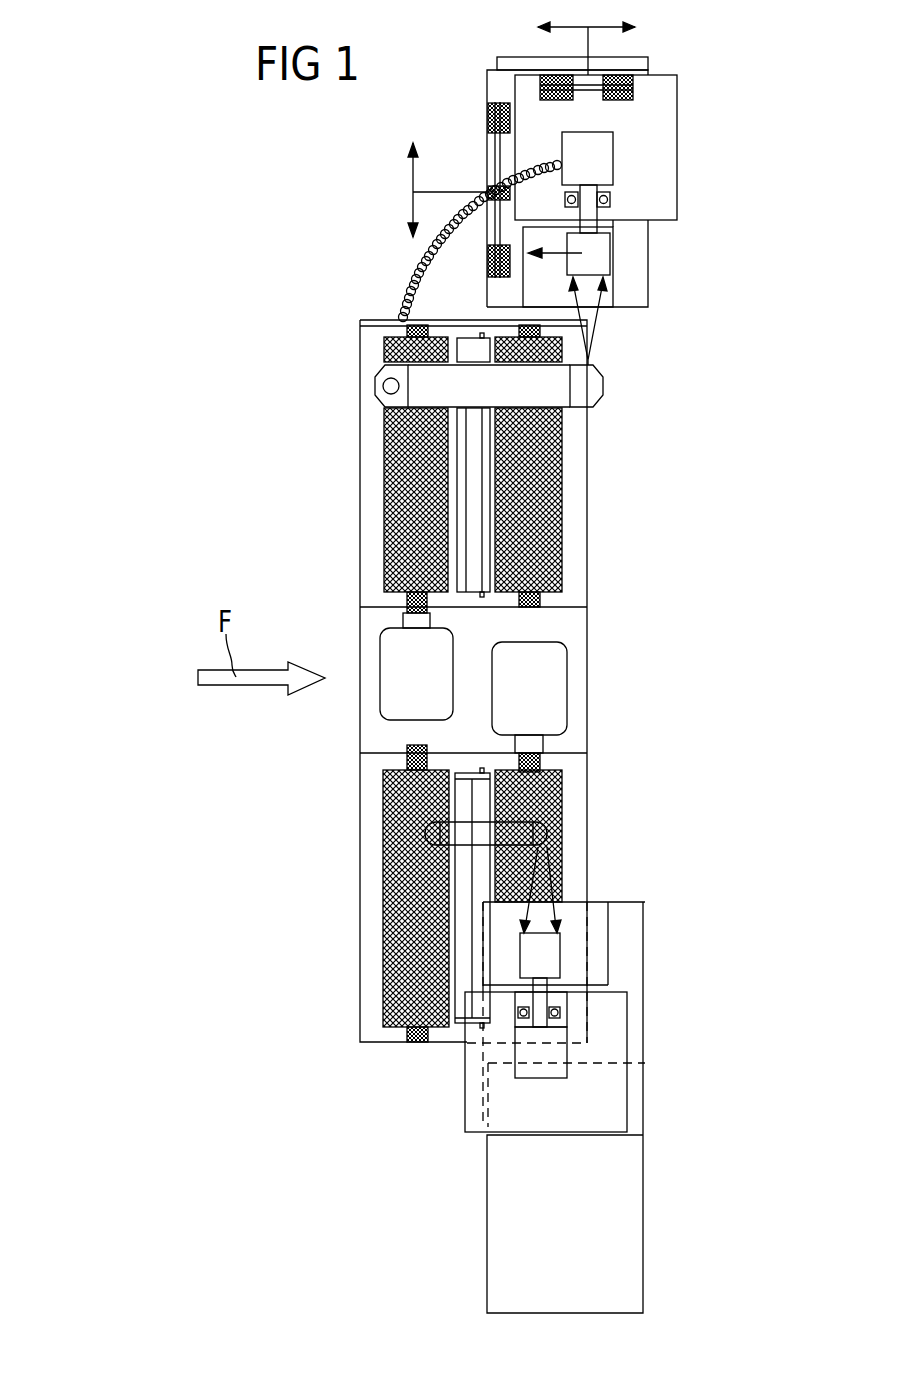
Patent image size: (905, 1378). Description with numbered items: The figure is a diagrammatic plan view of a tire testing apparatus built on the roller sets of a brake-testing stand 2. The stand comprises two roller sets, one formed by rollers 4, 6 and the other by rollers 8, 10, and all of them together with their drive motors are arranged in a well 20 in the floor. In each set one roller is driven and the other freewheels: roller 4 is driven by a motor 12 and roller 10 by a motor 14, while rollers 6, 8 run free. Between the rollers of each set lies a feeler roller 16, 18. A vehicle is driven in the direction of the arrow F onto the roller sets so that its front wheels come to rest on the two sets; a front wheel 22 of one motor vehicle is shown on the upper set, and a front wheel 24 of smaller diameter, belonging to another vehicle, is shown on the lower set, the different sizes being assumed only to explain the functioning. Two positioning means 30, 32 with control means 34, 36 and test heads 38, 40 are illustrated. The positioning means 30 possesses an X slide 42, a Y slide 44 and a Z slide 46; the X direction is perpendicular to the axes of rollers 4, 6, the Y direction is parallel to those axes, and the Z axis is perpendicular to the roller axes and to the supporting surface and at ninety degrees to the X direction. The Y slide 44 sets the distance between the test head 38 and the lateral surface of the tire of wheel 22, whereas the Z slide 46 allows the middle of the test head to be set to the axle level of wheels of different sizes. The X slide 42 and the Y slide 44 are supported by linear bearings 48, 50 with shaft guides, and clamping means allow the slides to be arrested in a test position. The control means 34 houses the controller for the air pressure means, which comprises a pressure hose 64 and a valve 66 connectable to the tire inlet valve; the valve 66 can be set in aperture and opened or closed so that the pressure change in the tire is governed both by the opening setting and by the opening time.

The brake-testing stand 2 is at (606, 650).
The roller 4 is at (405, 530).
The roller 6 is at (562, 449).
The roller 8 is at (407, 915).
The roller 10 is at (563, 865).
The motor 12 is at (397, 657).
The motor 14 is at (550, 693).
The feeler roller 16 is at (472, 457).
The feeler roller 18 is at (463, 873).
The well 20 is at (589, 533).
The front wheel 22 is at (390, 386).
The front wheel 24 is at (547, 831).
The positioning means 30 is at (700, 120).
The positioning means 32 is at (675, 1054).
The control means 34 is at (600, 162).
The control means 36 is at (530, 1053).
The test head 38 is at (600, 253).
The test head 40 is at (552, 955).
The X slide 42 is at (668, 97).
The Y slide 44 is at (499, 84).
The Z slide 46 is at (592, 208).
The linear bearing 48 is at (633, 58).
The linear bearing 50 is at (487, 264).
The pressure hose 64 is at (413, 291).
The valve 66 is at (385, 371).